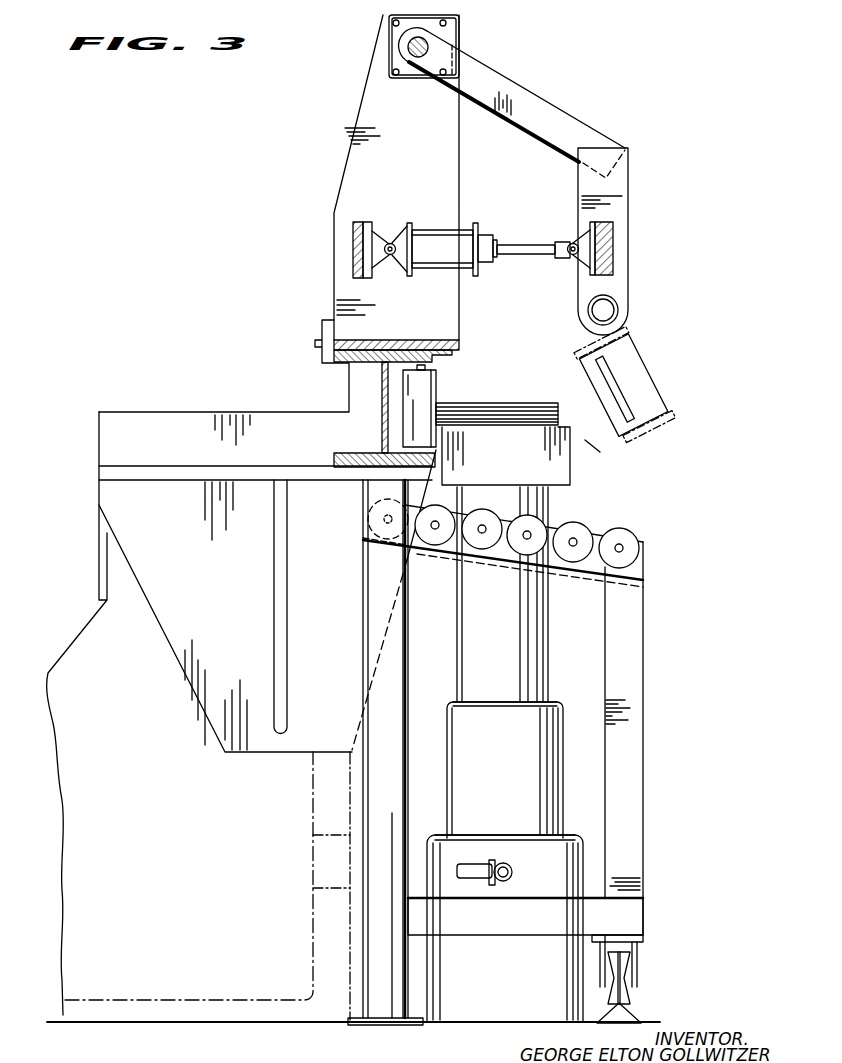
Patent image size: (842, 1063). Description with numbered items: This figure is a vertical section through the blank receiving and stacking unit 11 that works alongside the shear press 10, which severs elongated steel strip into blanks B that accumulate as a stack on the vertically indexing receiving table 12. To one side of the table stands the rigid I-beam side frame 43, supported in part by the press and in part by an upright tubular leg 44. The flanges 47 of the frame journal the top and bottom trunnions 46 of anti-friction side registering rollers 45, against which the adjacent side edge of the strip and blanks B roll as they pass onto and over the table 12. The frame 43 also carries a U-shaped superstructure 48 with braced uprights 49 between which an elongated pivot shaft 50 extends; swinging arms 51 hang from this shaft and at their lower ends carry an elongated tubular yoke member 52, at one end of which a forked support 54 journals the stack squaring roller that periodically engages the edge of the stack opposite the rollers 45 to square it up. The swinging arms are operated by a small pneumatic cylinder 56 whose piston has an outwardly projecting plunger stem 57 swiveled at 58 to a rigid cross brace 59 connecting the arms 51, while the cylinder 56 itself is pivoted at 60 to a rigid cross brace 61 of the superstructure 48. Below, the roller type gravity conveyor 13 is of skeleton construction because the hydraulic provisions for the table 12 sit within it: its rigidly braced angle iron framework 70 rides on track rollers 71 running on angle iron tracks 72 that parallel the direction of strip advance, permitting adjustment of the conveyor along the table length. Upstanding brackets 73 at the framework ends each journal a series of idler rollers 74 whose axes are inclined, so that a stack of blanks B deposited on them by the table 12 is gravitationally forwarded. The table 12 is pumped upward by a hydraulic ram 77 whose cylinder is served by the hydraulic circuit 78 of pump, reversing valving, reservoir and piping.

The shear press 10 is at (80, 605).
The blank receiving and stacking unit 11 is at (582, 446).
The receiving table 12 is at (564, 467).
The roller type gravity conveyor 13 is at (652, 581).
The I-beam side frame 43 is at (362, 395).
The upright tubular leg 44 is at (388, 725).
The side registering rollers 45 is at (420, 397).
The trunnions 46 is at (427, 368).
The flanges 47 is at (392, 350).
The U-shaped superstructure 48 is at (459, 346).
The braced uprights 49 is at (372, 98).
The pivot shaft 50 is at (407, 47).
The swinging arms 51 is at (601, 147).
The tubular yoke member 52 is at (618, 303).
The forked support 54 is at (655, 396).
The pneumatic cylinder 56 is at (438, 230).
The plunger stem 57 is at (521, 246).
The swivel 58 is at (567, 256).
The cross brace 59 is at (613, 245).
The pivot 60 is at (390, 243).
The cross brace 61 is at (352, 240).
The angle iron framework 70 is at (640, 748).
The track rollers 71 is at (636, 995).
The angle iron tracks 72 is at (630, 1018).
The upstanding brackets 73 is at (503, 548).
The idler rollers 74 is at (537, 531).
The hydraulic ram 77 is at (520, 657).
The hydraulic circuit 78 is at (505, 770).
The blanks B is at (515, 401).